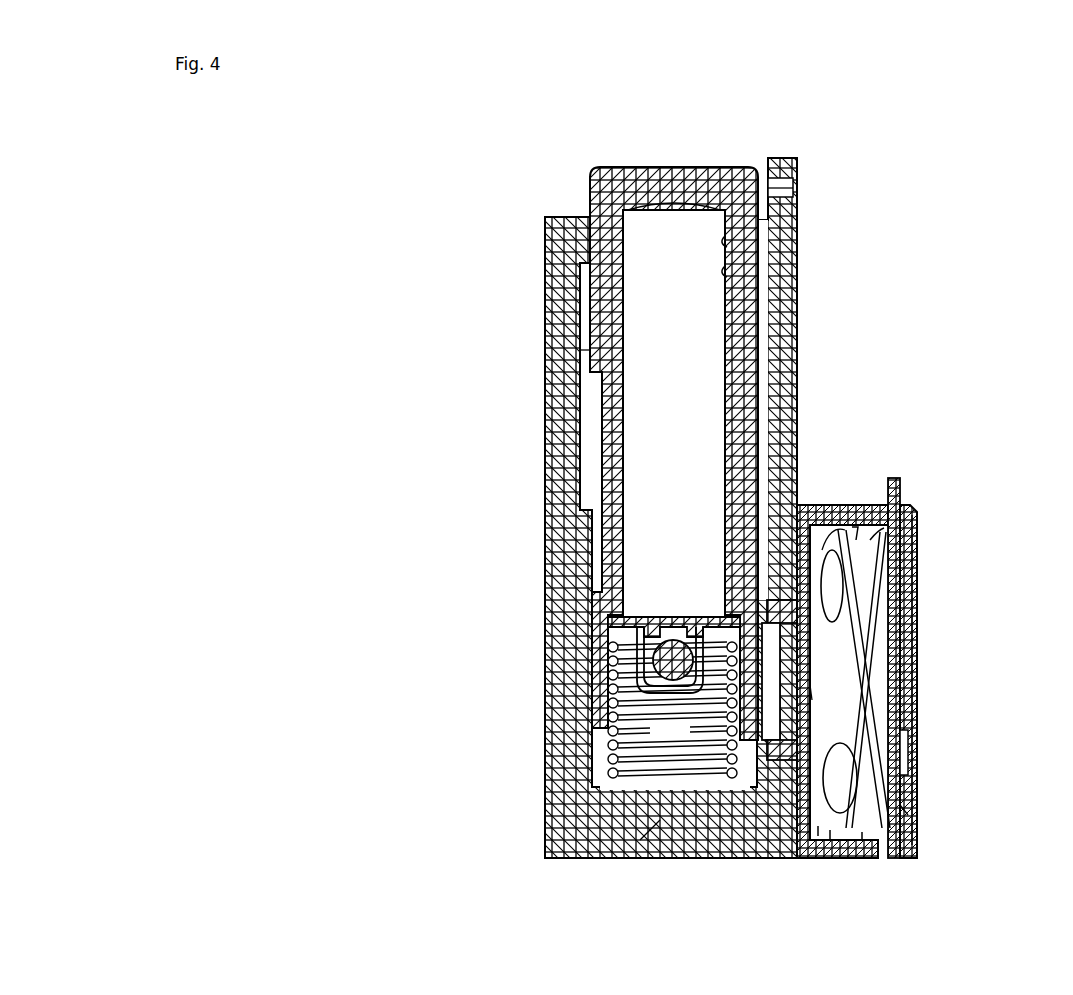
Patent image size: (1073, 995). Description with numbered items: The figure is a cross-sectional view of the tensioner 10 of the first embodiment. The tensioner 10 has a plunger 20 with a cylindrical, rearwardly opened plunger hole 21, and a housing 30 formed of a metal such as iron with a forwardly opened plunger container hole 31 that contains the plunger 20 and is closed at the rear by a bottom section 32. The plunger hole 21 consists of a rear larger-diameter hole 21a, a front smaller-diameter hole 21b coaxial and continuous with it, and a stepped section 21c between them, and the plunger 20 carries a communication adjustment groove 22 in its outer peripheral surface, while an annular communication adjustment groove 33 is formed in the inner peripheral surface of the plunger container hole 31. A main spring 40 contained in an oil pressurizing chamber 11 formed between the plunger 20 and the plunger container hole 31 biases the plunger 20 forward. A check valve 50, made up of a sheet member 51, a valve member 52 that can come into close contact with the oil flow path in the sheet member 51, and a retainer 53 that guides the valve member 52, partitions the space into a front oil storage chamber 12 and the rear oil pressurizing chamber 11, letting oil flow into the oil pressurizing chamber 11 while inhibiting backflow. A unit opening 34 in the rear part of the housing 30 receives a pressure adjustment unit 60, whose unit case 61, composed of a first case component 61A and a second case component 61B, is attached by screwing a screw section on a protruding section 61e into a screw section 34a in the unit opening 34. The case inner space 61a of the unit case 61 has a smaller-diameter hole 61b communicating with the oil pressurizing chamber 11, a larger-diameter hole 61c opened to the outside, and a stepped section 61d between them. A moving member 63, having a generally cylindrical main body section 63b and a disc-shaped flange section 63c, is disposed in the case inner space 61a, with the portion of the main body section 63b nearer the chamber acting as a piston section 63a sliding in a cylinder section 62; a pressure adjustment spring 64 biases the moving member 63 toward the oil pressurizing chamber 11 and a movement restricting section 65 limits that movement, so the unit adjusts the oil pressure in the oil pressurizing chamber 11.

The tensioner 10 is at (464, 142).
The oil pressurizing chamber 11 is at (681, 747).
The oil storage chamber 12 is at (686, 431).
The plunger 20 is at (617, 185).
The plunger hole 21 is at (727, 242).
The larger-diameter hole 21a is at (613, 738).
The smaller-diameter hole 21b is at (727, 272).
The stepped section 21c is at (620, 612).
The communication adjustment groove 22 is at (600, 390).
The housing 30 is at (560, 240).
The plunger container hole 31 is at (588, 565).
The bottom section 32 is at (655, 825).
The communication adjustment groove 33 is at (585, 350).
The unit opening 34 is at (745, 765).
The screw section 34a is at (770, 745).
The main spring 40 is at (612, 781).
The check valve 50 is at (572, 674).
The sheet member 51 is at (640, 648).
The valve member 52 is at (645, 665).
The retainer 53 is at (665, 695).
The pressure adjustment unit 60 is at (918, 642).
The unit case 61 is at (929, 642).
The first case component 61A is at (812, 520).
The second case component 61B is at (880, 835).
The case inner space 61a is at (840, 580).
The smaller-diameter hole 61b is at (933, 716).
The larger-diameter hole 61c is at (897, 480).
The stepped section 61d is at (861, 470).
The protruding section 61e is at (805, 845).
The cylinder section 62 is at (840, 778).
The moving member 63 is at (905, 735).
The piston section 63a is at (783, 692).
The main body section 63b is at (915, 810).
The flange section 63c is at (830, 840).
The pressure adjustment spring 64 is at (907, 763).
The movement restricting section 65 is at (838, 540).